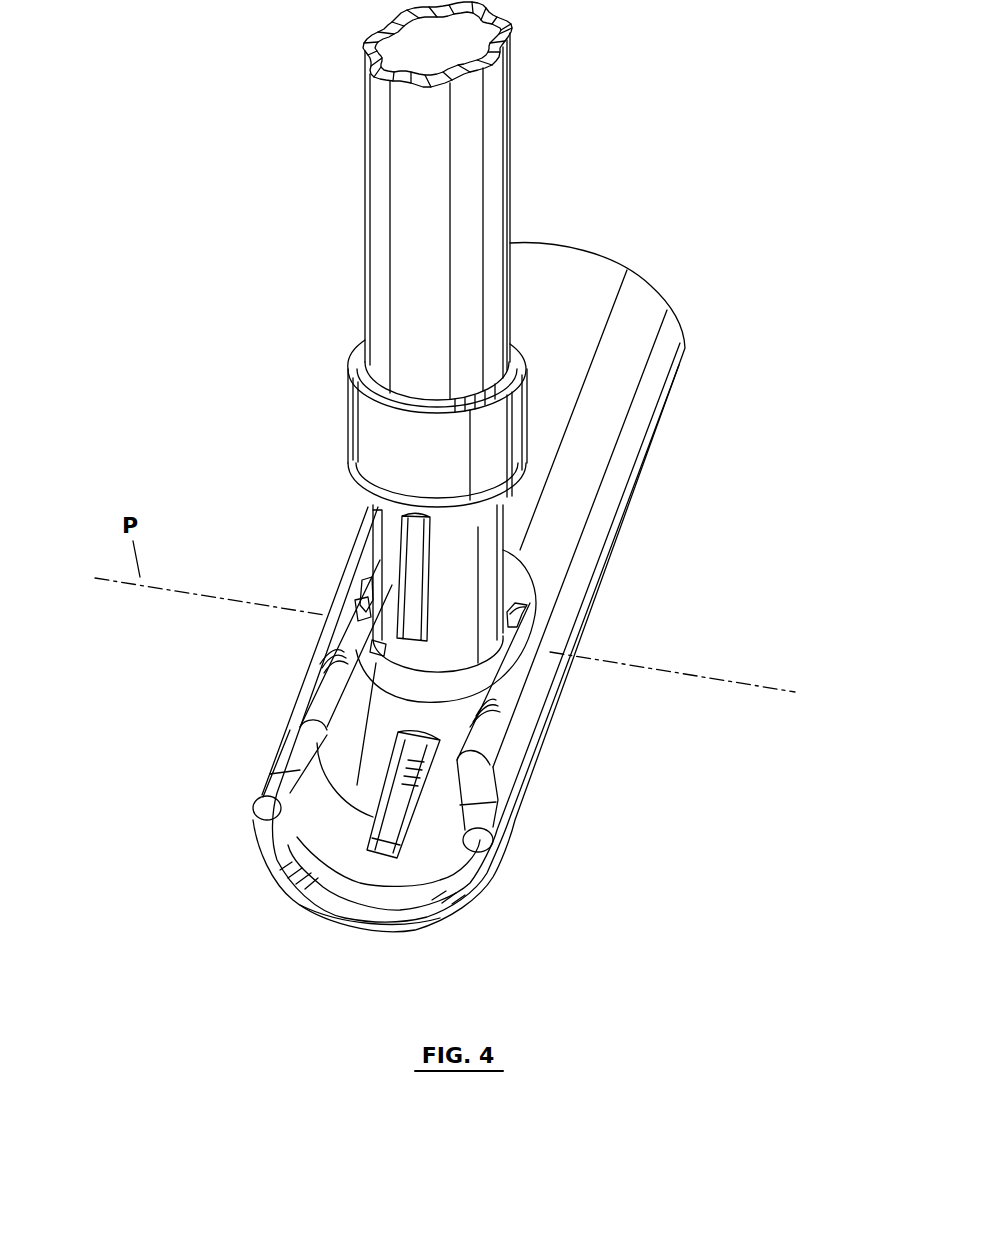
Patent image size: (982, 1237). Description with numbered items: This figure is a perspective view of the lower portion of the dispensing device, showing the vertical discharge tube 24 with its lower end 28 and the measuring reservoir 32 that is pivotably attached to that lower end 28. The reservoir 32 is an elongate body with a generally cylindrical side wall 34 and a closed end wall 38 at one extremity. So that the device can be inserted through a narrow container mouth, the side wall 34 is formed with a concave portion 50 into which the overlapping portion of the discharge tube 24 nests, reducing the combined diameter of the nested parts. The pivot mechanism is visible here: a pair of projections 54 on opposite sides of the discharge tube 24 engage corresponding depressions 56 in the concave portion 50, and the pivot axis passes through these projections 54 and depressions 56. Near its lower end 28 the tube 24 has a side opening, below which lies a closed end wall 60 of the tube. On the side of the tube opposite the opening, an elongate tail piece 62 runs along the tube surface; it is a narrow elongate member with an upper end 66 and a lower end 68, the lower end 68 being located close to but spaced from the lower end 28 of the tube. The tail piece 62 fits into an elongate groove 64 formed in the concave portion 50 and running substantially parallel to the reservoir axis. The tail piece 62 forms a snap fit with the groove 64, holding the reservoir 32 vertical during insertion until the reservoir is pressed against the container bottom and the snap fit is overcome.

The discharge tube 24 is at (512, 137).
The measuring reservoir 32 is at (714, 269).
The side wall 34 is at (650, 397).
The end wall 38 is at (411, 913).
The lower end 28 is at (520, 523).
The depressions 56 is at (523, 608).
The upper end 66 is at (367, 515).
The tail piece 62 is at (373, 568).
The projections 54 is at (367, 619).
The lower end 68 is at (385, 653).
The closed end wall 60 is at (373, 708).
The concave portion 50 is at (357, 787).
The elongate groove 64 is at (377, 827).